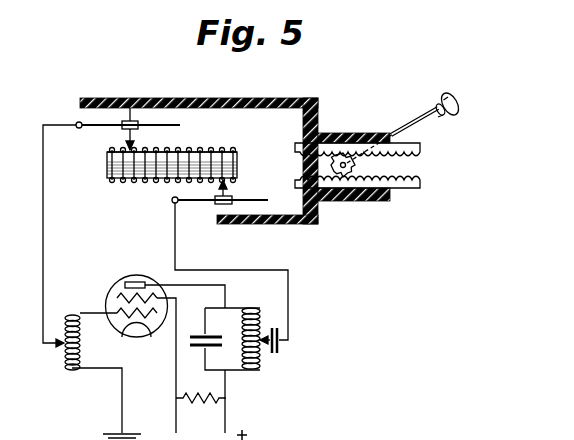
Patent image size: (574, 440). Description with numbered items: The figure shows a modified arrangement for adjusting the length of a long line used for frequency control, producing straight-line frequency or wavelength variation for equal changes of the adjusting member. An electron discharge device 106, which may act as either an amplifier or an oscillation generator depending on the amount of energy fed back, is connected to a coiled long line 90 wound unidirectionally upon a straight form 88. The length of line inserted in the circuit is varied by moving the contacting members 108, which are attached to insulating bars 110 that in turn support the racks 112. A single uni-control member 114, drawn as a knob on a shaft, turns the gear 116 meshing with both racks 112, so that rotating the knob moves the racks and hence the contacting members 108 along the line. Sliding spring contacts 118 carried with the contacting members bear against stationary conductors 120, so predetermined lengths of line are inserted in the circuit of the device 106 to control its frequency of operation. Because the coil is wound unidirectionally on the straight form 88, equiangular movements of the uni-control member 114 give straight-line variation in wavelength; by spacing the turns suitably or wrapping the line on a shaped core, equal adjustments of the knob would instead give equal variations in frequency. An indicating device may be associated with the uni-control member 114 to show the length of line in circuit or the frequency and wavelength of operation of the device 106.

The straight form 88 is at (238, 160).
The coiled long line 90 is at (198, 150).
The electron discharge device 106 is at (133, 273).
The contacting members 108 is at (137, 148).
The insulating bars 110 is at (201, 99).
The racks 112 is at (421, 181).
The uni-control member 114 is at (459, 104).
The gear 116 is at (358, 166).
The sliding spring contacts 118 is at (121, 129).
The stationary conductors 120 is at (87, 122).